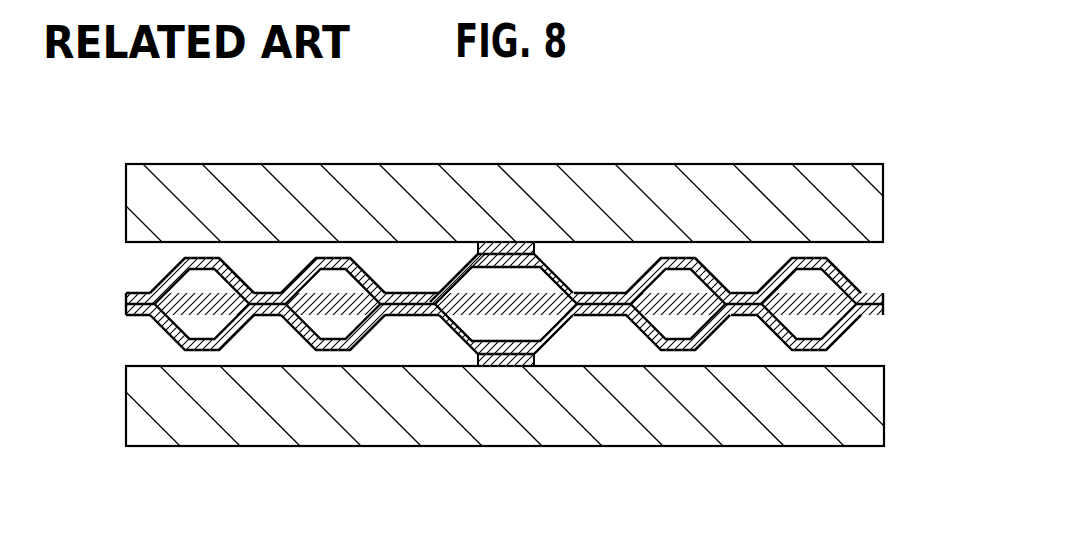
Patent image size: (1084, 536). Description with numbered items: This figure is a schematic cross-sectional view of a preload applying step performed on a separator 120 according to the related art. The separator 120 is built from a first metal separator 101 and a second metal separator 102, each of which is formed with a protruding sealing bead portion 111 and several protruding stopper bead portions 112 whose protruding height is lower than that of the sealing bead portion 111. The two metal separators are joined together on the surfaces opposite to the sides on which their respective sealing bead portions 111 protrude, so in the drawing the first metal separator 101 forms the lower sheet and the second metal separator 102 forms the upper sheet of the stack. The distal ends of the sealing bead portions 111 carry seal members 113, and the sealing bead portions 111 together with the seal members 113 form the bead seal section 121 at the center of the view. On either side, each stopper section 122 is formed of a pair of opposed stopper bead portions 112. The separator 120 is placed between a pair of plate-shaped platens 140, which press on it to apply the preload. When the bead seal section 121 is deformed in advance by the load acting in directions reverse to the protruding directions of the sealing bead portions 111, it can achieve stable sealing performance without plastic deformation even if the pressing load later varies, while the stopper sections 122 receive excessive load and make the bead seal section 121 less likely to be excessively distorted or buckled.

The first metal separator 101 is at (143, 330).
The second metal separator 102 is at (143, 280).
The sealing bead portion 111 is at (462, 326).
The stopper bead portion 112 is at (242, 282).
The seal member 113 is at (511, 250).
The separator 120 is at (890, 269).
The bead seal section 121 is at (445, 268).
The stopper section 122 is at (163, 268).
The plate-shaped platen 140 is at (598, 172).